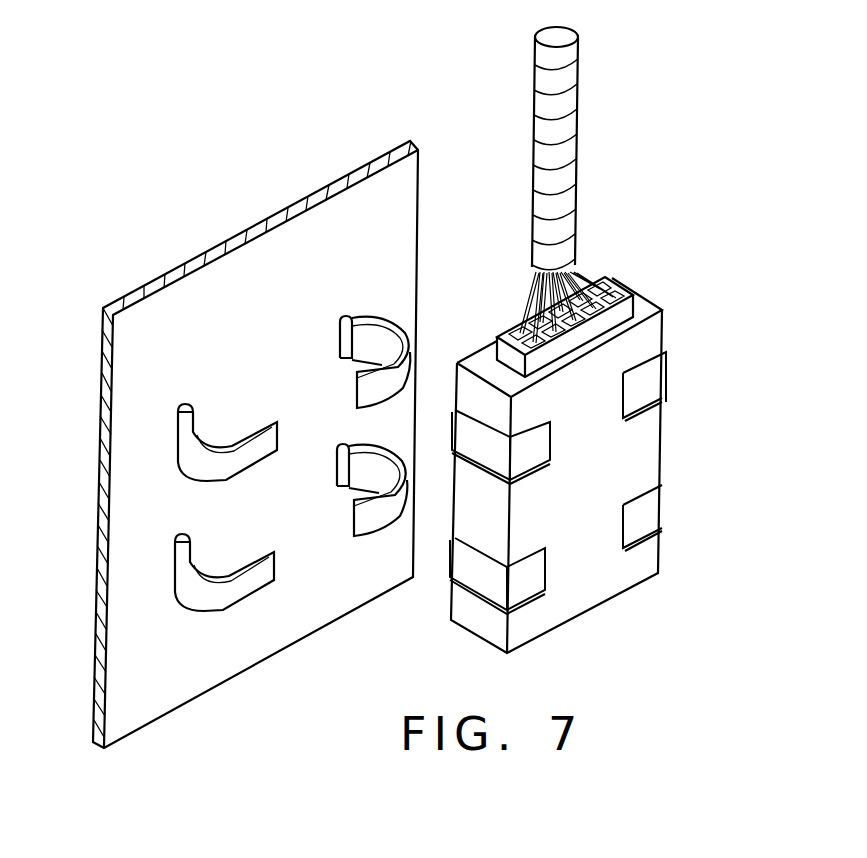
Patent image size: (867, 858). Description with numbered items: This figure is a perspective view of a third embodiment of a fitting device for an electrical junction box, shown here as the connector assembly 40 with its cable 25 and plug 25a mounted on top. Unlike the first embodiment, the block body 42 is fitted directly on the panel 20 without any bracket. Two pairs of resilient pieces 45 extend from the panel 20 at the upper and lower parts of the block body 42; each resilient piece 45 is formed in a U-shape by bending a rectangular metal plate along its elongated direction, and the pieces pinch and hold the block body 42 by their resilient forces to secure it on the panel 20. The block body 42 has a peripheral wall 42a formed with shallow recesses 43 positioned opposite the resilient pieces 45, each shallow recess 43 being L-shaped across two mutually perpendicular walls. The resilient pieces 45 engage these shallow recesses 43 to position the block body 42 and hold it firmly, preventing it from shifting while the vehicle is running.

The panel 20 is at (218, 293).
The cable 25 is at (563, 137).
The plug 25a is at (633, 303).
The connector assembly 40 is at (773, 207).
The block body 42 is at (666, 439).
The peripheral wall 42a is at (588, 578).
The shallow recess 43 is at (642, 380).
The resilient piece 45 is at (203, 585).